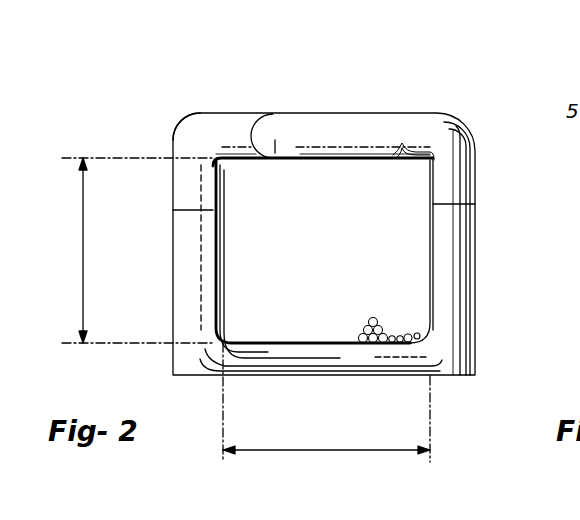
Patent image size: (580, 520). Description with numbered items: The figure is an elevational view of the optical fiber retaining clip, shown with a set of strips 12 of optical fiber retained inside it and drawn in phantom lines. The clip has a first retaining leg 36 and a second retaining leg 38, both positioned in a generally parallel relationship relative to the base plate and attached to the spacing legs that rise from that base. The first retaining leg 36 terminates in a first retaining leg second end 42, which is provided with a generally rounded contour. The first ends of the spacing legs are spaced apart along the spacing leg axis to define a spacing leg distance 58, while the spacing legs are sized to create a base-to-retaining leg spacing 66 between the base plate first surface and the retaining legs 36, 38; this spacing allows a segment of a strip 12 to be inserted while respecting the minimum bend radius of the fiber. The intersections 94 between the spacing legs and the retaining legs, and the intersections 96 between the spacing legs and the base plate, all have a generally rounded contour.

The strip of optical fiber 12 is at (425, 331).
The first retaining leg 36 is at (375, 124).
The second retaining leg 38 is at (190, 119).
The first retaining leg second end 42 is at (250, 133).
The spacing leg distance 58 is at (352, 452).
The base-to-retaining leg spacing 66 is at (80, 237).
The intersections between spacing legs and retaining legs 94 is at (225, 167).
The intersections between spacing legs and base plate 96 is at (410, 323).